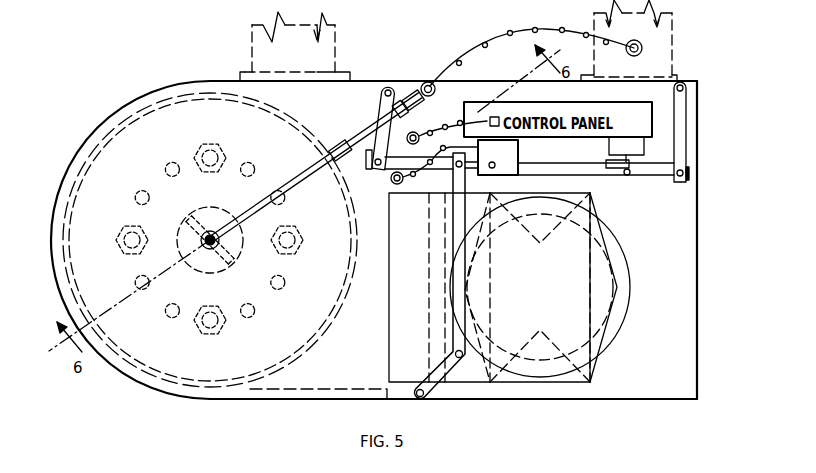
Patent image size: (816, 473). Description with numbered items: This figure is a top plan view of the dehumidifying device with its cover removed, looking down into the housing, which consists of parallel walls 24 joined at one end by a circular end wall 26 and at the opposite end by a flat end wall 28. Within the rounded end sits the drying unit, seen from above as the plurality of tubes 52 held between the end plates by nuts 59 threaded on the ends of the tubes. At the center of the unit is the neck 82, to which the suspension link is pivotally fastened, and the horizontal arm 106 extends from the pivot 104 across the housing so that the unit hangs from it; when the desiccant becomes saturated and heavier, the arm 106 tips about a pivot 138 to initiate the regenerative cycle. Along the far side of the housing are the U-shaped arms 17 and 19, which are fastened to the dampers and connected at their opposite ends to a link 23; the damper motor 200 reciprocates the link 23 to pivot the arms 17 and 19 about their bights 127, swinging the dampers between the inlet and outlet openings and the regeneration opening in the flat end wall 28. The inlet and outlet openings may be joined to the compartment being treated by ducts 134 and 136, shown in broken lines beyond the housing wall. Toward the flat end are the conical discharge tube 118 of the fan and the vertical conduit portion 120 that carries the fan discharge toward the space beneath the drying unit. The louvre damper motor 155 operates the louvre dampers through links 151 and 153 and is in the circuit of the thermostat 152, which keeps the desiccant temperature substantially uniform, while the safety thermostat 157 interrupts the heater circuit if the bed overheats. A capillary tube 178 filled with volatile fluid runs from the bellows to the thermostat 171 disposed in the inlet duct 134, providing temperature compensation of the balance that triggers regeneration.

The circular end wall 26 is at (157, 92).
The flat end wall 28 is at (699, 288).
The parallel walls 24 is at (649, 401).
The nuts 59 is at (222, 146).
The tubes 52 is at (128, 226).
The pivot 104 is at (208, 249).
The neck 82 is at (215, 213).
The horizontal arm 106 is at (265, 180).
The pivot 138 is at (339, 141).
The U-shaped arm 17 is at (380, 101).
The bights 127 is at (388, 88).
The safety thermostat 157 is at (464, 110).
The thermostat 152 is at (391, 180).
The damper motor 200 is at (642, 146).
The louvre damper motor 155 is at (521, 145).
The link 23 is at (654, 176).
The U-shaped arm 19 is at (683, 110).
The duct 134 is at (677, 54).
The duct 136 is at (251, 32).
The capillary tube 178 is at (461, 62).
The thermostat 171 is at (643, 45).
The link 151 is at (457, 203).
The vertical conduit portion 120 is at (600, 255).
The conical discharge tube 118 is at (600, 338).
The link 153 is at (452, 370).